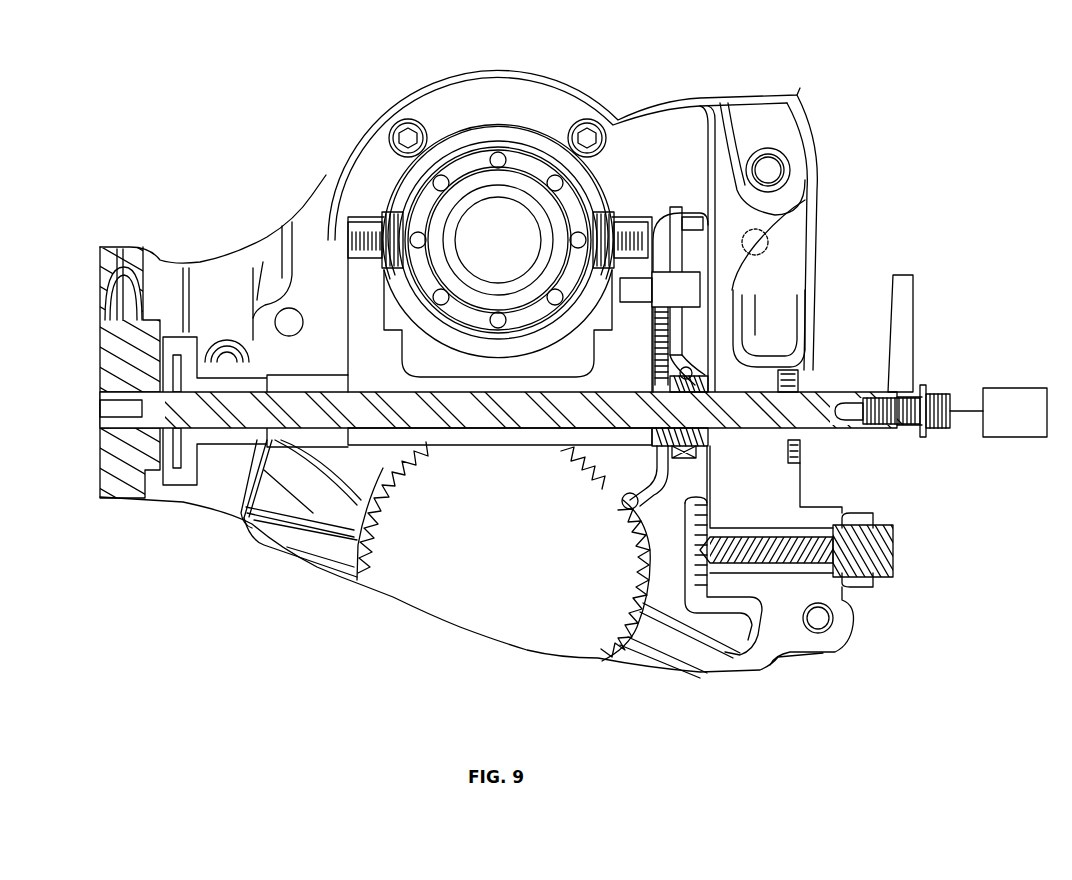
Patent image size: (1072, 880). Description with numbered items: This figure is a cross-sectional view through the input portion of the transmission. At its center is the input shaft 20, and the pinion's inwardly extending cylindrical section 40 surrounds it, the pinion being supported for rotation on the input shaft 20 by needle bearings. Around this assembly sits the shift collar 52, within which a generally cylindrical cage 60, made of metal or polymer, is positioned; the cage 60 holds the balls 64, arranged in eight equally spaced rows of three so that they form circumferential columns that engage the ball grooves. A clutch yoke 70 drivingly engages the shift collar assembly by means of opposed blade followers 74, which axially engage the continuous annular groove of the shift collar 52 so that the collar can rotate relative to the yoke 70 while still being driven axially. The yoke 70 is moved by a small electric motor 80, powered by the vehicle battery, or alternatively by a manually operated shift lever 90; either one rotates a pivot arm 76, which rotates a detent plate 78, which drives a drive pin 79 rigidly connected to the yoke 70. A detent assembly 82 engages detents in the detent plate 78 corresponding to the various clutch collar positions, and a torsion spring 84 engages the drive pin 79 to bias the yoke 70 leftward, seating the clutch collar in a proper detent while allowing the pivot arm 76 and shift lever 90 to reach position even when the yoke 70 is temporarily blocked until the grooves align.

The input shaft 20 is at (509, 248).
The cylindrical section 40 is at (410, 118).
The shift collar 52 is at (508, 127).
The cage 60 is at (532, 163).
The balls 64 is at (497, 155).
The clutch yoke 70 is at (638, 369).
The blade followers 74 is at (383, 228).
The pivot arm 76 is at (247, 407).
The detent plate 78 is at (705, 505).
The drive pin 79 is at (703, 283).
The electric motor 80 is at (1010, 388).
The detent assembly 82 is at (888, 592).
The torsion spring 84 is at (680, 250).
The shift lever 90 is at (907, 277).